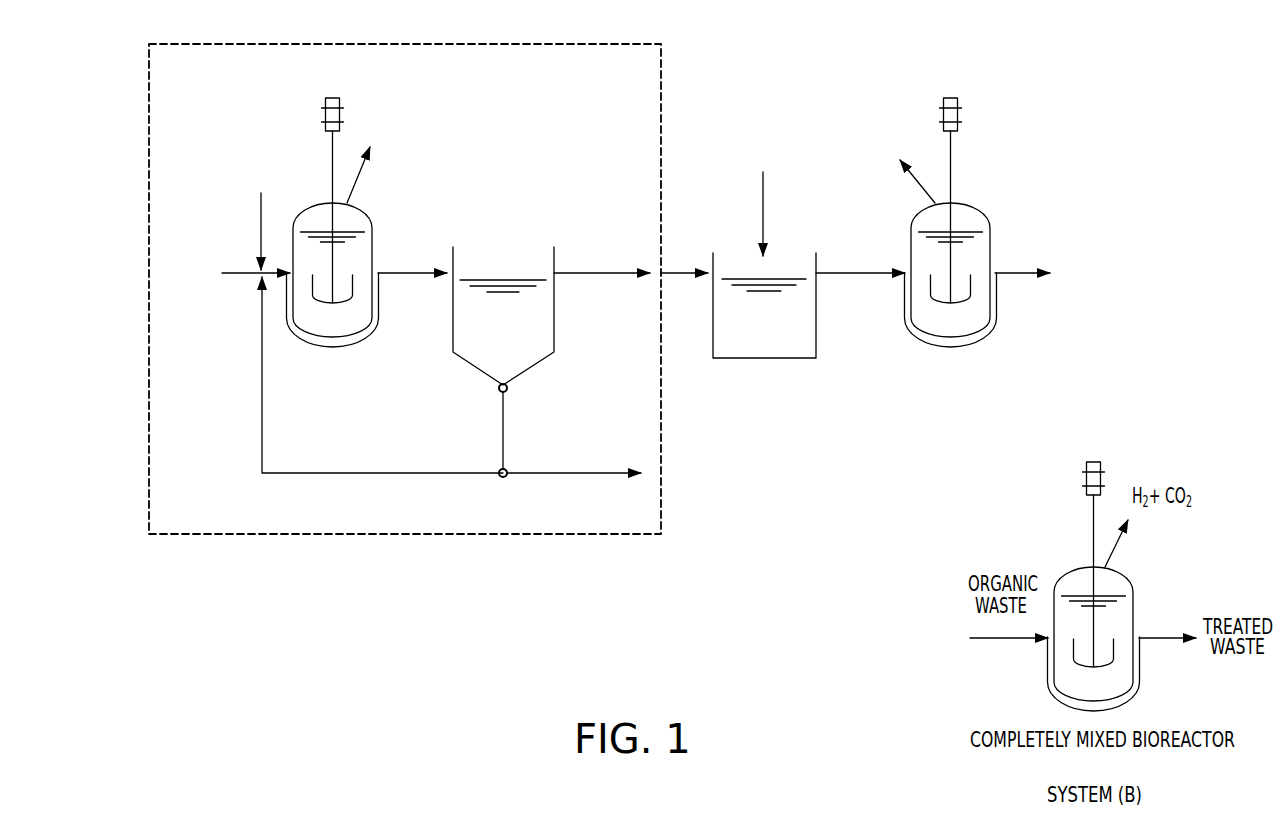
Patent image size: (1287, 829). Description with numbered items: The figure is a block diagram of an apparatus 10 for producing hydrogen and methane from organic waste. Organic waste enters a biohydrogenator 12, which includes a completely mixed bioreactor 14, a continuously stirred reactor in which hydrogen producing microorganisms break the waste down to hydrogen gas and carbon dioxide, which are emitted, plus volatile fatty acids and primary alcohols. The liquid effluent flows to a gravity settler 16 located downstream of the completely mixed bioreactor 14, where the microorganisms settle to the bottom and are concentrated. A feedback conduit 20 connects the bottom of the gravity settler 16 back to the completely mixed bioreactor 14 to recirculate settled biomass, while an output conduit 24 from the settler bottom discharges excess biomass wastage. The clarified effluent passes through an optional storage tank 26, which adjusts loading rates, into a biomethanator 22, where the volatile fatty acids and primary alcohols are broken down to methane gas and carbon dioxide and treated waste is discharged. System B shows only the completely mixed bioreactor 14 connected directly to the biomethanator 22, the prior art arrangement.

The apparatus 10 is at (1020, 105).
The biohydrogenator 12 is at (661, 121).
The completely mixed bioreactor 14 is at (373, 248).
The gravity settler 16 is at (554, 264).
The feedback conduit 20 is at (348, 480).
The biomethanator 22 is at (991, 241).
The output conduit 24 is at (560, 473).
The storage tank 26 is at (816, 330).